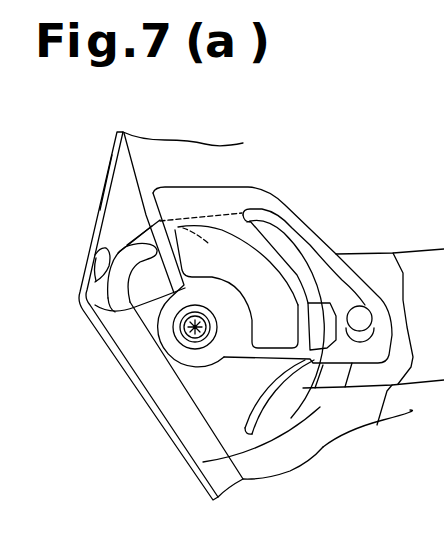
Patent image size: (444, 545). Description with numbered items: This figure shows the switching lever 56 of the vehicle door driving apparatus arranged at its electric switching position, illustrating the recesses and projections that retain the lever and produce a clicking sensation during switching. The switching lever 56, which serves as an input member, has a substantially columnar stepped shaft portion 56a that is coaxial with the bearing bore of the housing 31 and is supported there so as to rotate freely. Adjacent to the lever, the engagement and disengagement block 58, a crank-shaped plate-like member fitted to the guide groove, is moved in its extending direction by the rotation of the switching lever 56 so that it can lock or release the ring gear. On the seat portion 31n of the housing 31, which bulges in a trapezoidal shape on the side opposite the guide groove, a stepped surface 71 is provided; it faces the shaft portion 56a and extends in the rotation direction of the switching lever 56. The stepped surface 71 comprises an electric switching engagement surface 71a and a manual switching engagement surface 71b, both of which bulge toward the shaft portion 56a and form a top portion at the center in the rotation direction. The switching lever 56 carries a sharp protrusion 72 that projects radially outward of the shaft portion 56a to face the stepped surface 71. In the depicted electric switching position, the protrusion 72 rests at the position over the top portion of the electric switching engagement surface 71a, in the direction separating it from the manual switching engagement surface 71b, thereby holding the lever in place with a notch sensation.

The housing 31 is at (175, 443).
The seat portion 31n is at (110, 197).
The switching lever 56 is at (222, 200).
The shaft portion 56a is at (200, 343).
The engagement and disengagement block 58 is at (372, 258).
The stepped surface 71 is at (110, 308).
The electric switching engagement surface 71a is at (98, 275).
The manual switching engagement surface 71b is at (201, 242).
The protrusion 72 is at (108, 248).